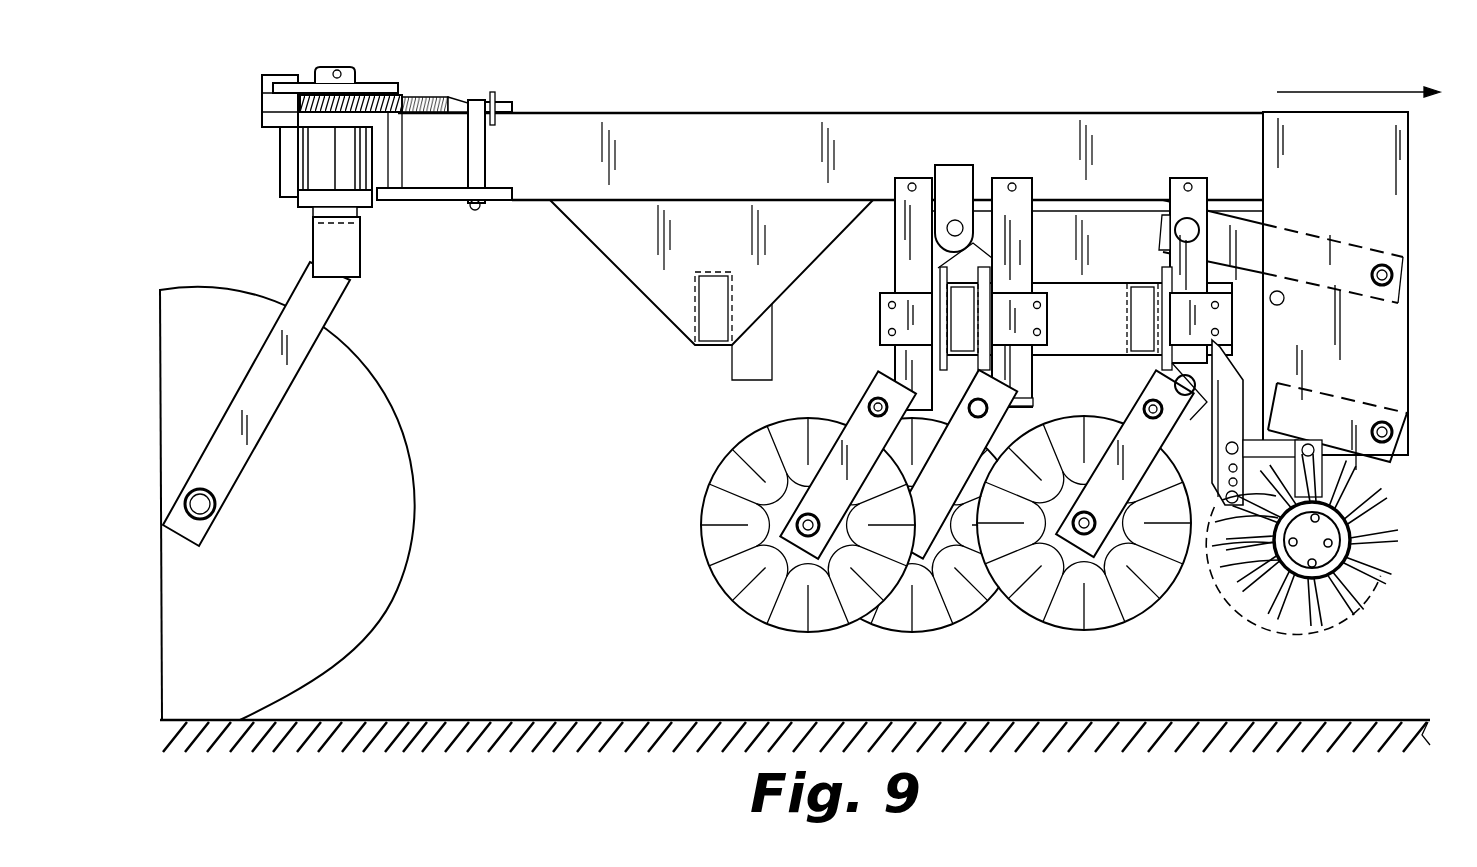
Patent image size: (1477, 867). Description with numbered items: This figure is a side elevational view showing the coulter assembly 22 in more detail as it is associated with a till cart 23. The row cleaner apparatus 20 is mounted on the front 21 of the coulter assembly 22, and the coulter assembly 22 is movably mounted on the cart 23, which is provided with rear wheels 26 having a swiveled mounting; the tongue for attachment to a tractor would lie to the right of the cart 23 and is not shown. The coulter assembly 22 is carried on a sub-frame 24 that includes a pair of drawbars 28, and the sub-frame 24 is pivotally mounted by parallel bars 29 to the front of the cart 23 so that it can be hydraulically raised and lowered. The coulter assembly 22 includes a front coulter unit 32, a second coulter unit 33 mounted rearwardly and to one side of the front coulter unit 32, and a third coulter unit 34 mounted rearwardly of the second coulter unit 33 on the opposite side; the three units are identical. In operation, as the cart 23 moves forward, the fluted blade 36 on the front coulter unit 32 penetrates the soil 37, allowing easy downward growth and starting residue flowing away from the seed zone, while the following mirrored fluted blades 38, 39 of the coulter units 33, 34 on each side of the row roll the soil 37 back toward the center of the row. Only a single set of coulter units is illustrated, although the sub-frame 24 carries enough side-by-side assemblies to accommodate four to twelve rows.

The row cleaner apparatus 20 is at (1288, 642).
The front 21 is at (1210, 277).
The coulter assembly 22 is at (1032, 650).
The cart 23 is at (1162, 88).
The sub-frame 24 is at (1110, 190).
The rear wheels 26 is at (393, 418).
The drawbars 28 is at (940, 287).
The parallel bars 29 is at (1245, 215).
The front coulter unit 32 is at (1108, 648).
The second coulter unit 33 is at (915, 648).
The third coulter unit 34 is at (738, 636).
The fluted blade 36 is at (1062, 622).
The soil 37 is at (531, 718).
The fluted blade 38 is at (890, 615).
The fluted blade 39 is at (715, 598).